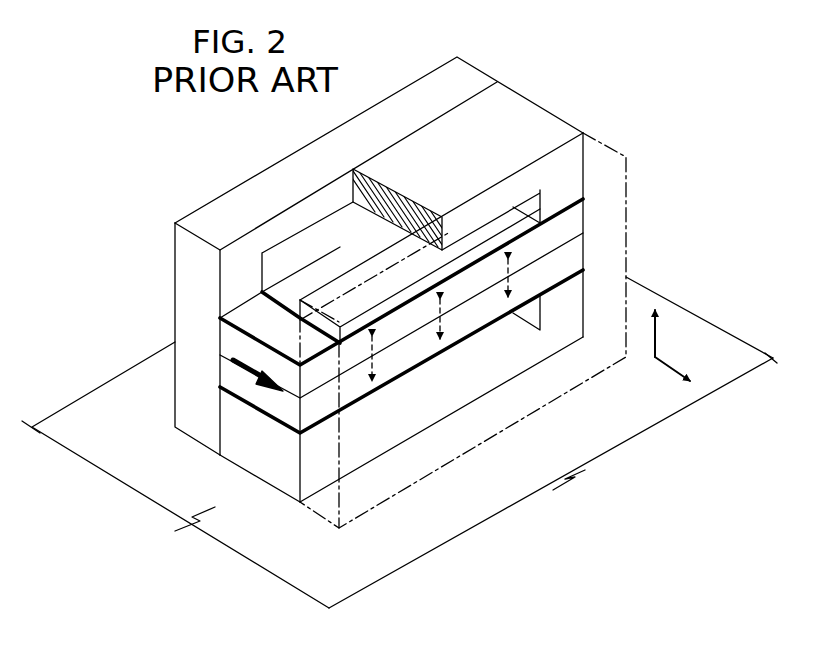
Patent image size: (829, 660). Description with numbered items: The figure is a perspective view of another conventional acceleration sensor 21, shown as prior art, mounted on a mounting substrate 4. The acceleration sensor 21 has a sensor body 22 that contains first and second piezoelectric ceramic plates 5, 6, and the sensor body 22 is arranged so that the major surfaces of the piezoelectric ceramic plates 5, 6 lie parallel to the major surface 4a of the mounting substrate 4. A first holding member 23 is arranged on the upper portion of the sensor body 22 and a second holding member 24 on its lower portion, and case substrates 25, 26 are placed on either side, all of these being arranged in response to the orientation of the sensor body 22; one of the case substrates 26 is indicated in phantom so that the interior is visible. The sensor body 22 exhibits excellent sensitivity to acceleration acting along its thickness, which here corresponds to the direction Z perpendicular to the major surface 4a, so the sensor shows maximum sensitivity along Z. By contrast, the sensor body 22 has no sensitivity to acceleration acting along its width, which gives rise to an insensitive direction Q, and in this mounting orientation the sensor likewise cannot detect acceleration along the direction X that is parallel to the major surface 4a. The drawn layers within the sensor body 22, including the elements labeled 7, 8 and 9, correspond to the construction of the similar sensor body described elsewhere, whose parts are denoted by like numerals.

The mounting substrate 4 is at (122, 420).
The major surface 4a is at (647, 412).
The first piezoelectric ceramic plate 5 is at (423, 348).
The second piezoelectric ceramic plate 6 is at (468, 287).
The lower electrode 7 is at (358, 403).
The upper electrode 8 is at (566, 204).
The vibrating plate 9 is at (400, 357).
The acceleration sensor 21 is at (221, 182).
The sensor body 22 is at (585, 244).
The first holding member 23 is at (540, 122).
The second holding member 24 is at (283, 467).
The case substrate 25 is at (193, 297).
The case substrate 26 is at (632, 170).
The insensitive direction Q is at (247, 380).
The direction X is at (670, 368).
The direction Z is at (680, 315).